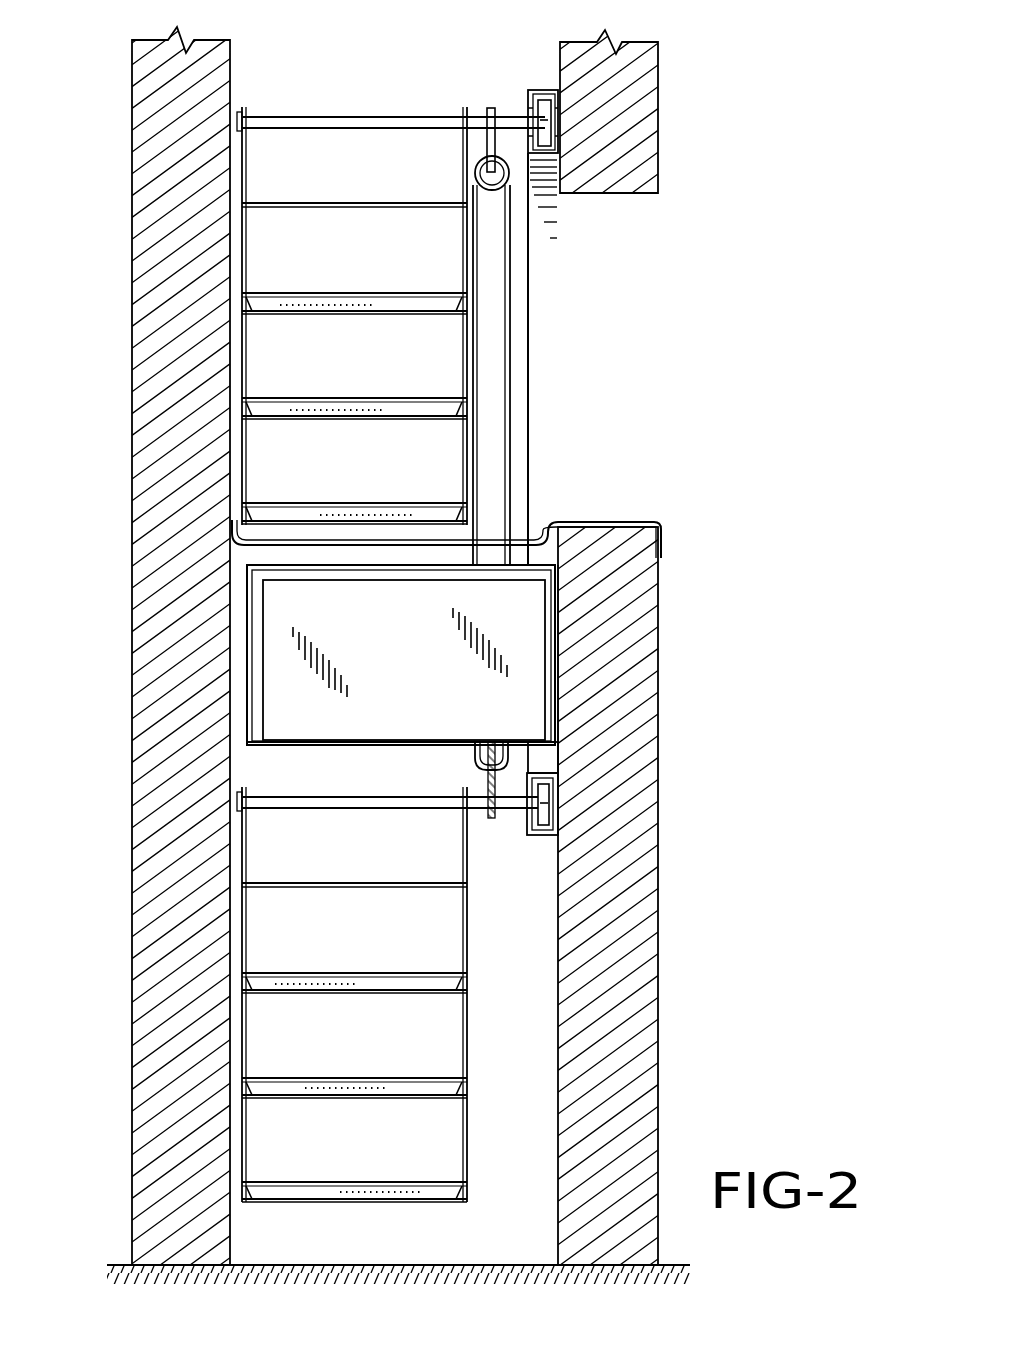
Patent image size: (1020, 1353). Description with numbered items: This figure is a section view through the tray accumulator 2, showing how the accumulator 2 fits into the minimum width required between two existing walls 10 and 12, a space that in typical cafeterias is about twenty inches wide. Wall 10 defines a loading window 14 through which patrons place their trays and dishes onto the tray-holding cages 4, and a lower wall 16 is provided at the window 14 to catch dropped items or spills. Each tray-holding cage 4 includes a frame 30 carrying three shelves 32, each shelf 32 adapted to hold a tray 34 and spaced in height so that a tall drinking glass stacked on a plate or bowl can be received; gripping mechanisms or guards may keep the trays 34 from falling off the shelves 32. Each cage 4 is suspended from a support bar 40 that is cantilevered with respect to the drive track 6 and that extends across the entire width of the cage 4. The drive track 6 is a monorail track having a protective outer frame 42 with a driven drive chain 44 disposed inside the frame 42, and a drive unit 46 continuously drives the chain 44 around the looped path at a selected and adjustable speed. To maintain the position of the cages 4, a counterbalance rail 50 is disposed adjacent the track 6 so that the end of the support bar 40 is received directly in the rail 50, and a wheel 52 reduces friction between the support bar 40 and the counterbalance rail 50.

The tray accumulator 2 is at (360, 50).
The tray-holding cage 4 is at (474, 378).
The drive track 6 is at (508, 88).
The wall 10 is at (650, 88).
The wall 12 is at (147, 282).
The loading window 14 is at (612, 470).
The lower wall 16 is at (393, 548).
The frame 30 is at (342, 203).
The shelf 32 is at (302, 316).
The tray 34 is at (355, 293).
The support bar 40 is at (283, 117).
The protective outer frame 42 is at (493, 298).
The drive chain 44 is at (490, 171).
The drive unit 46 is at (402, 714).
The counterbalance rail 50 is at (540, 90).
The wheel 52 is at (545, 124).